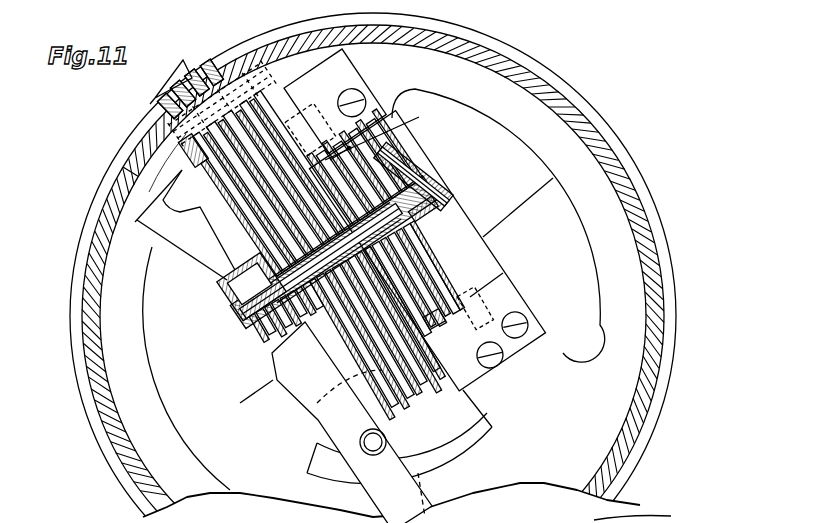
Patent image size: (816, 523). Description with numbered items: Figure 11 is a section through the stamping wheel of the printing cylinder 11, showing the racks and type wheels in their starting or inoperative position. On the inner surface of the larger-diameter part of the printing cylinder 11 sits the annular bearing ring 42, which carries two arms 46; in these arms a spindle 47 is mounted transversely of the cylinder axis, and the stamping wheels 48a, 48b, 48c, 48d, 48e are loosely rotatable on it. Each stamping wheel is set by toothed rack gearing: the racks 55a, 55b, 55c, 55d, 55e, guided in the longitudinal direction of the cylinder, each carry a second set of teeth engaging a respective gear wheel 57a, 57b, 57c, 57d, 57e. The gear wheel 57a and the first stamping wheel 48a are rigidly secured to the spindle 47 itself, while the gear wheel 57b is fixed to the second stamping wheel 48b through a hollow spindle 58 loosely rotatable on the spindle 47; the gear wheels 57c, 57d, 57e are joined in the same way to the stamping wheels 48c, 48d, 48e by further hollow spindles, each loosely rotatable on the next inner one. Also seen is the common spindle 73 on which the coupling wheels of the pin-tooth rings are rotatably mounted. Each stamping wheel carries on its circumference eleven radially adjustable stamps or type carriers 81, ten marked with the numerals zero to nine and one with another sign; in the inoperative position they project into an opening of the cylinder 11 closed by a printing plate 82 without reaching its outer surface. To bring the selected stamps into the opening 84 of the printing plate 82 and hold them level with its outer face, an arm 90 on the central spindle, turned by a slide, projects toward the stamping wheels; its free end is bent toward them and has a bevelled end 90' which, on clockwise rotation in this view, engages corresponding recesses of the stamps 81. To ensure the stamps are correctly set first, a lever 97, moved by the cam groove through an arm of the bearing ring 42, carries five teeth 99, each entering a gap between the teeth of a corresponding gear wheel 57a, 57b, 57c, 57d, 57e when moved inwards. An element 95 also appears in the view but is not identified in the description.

The printing cylinder 11 is at (632, 412).
The annular bearing ring 42 is at (555, 350).
The arms 46 is at (452, 209).
The spindle 47 is at (235, 312).
The first stamping wheel 48a is at (390, 422).
The second stamping wheel 48b is at (414, 402).
The stamping wheel 48c is at (440, 382).
The stamping wheel 48d is at (447, 386).
The stamping wheel 48e is at (433, 384).
The toothed rack 55a is at (437, 237).
The toothed rack 55b is at (445, 255).
The toothed rack 55c is at (453, 270).
The toothed rack 55d is at (450, 323).
The toothed rack 55e is at (437, 322).
The gear wheel 57a is at (380, 180).
The gear wheel 57b is at (423, 228).
The gear wheel 57c is at (347, 226).
The gear wheel 57d is at (365, 211).
The gear wheel 57e is at (320, 247).
The hollow spindle 58 is at (427, 178).
The common spindle 73 is at (367, 438).
The stamps or type carriers 81 is at (180, 70).
The printing plate 82 is at (133, 143).
The opening of the printing plate 84 is at (213, 63).
The arm 90 is at (176, 225).
The bevelled end 90' is at (235, 104).
The cover plate 95 is at (310, 122).
The lever 97 is at (349, 148).
The teeth 99 is at (419, 120).